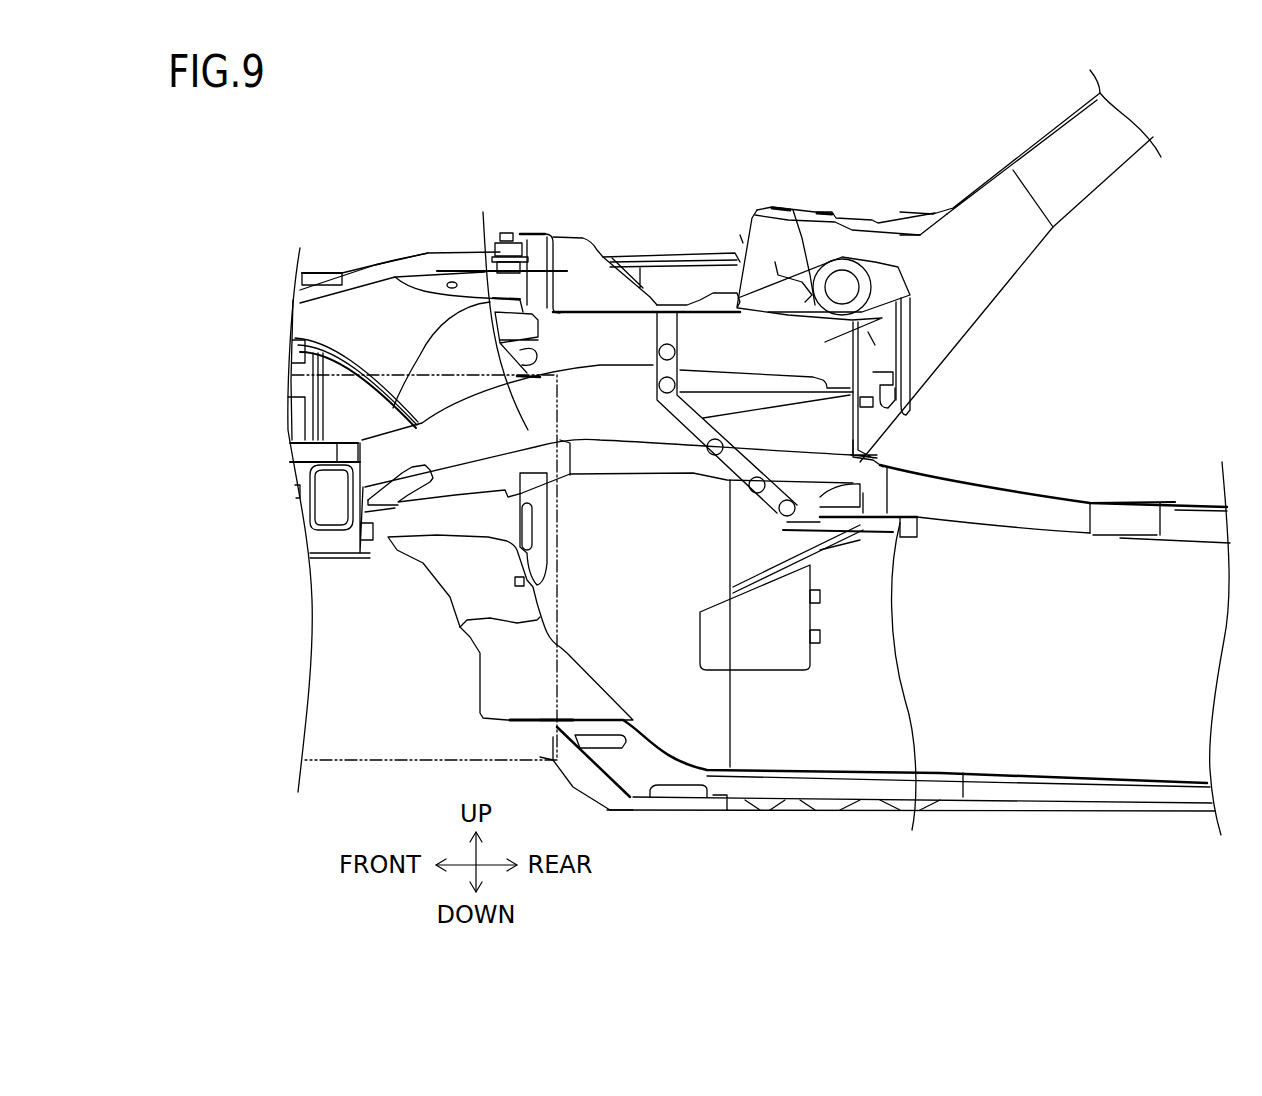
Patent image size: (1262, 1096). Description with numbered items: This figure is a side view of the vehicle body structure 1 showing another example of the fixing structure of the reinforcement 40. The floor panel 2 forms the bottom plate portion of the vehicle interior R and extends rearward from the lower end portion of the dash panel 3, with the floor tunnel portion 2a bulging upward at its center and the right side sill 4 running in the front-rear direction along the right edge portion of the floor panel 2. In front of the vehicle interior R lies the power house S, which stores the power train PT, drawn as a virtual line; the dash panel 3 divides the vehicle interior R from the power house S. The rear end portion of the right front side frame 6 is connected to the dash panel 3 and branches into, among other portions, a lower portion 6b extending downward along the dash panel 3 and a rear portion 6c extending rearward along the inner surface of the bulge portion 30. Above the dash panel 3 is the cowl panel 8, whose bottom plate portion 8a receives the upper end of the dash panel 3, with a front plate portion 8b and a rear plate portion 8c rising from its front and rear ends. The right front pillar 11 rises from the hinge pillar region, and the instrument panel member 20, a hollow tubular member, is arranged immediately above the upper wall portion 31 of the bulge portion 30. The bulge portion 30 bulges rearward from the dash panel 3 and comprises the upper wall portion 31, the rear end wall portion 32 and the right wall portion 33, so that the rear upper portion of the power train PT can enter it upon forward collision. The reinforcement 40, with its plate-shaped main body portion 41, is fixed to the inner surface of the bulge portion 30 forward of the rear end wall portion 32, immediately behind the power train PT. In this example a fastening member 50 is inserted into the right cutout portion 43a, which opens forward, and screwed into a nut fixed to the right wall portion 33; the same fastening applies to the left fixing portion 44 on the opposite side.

The vehicle body structure 1 is at (829, 116).
The floor panel 2 is at (1099, 792).
The floor tunnel portion 2a is at (1158, 533).
The dash panel 3 is at (645, 752).
The right side sill 4 is at (1028, 795).
The right front side frame 6 is at (341, 568).
The lower portion 6b is at (447, 623).
The rear portion 6c is at (433, 286).
The cowl panel 8 is at (604, 241).
The bottom plate portion 8a is at (707, 302).
The front plate portion 8b is at (646, 306).
The rear plate portion 8c is at (745, 230).
The right front pillar 11 is at (1030, 147).
The instrument panel member 20 is at (868, 246).
The bulge portion 30 is at (872, 436).
The upper wall portion 31 is at (802, 238).
The rear end wall portion 32 is at (890, 353).
The right wall portion 33 is at (885, 314).
The reinforcement 40 is at (888, 483).
The main body portion 41 is at (840, 397).
The right cutout portion 43a is at (658, 386).
The left fixing portion 44 is at (826, 674).
The fastening member 50 is at (676, 355).
The power house S is at (396, 336).
The vehicle interior R is at (1095, 403).
The power train PT is at (368, 762).